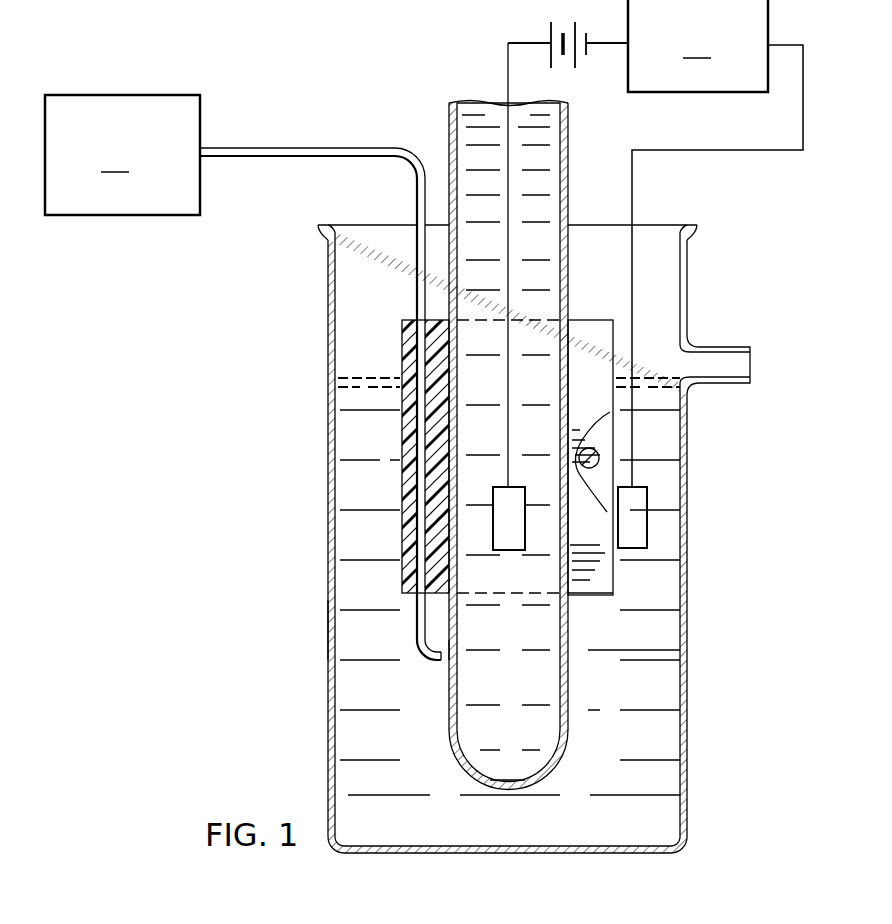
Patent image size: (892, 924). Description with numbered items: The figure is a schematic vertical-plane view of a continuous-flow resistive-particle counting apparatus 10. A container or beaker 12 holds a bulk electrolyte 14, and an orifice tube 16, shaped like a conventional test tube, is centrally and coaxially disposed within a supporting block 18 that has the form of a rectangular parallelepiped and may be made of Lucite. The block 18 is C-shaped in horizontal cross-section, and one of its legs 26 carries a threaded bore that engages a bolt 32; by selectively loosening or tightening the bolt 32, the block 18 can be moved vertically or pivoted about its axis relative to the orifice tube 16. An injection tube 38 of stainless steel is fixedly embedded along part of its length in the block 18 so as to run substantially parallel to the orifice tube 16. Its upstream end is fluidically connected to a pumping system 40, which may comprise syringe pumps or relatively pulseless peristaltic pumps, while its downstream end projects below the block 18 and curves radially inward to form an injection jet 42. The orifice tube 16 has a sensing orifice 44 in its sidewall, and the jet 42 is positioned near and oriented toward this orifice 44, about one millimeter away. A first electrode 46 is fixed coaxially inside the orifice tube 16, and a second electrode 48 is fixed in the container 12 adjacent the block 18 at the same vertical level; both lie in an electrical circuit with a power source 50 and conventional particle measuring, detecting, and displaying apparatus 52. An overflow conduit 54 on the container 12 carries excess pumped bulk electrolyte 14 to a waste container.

The continuous-flow resistive-particle counting apparatus 10 is at (315, 630).
The container or beaker 12 is at (372, 853).
The bulk electrolyte 14 is at (612, 815).
The orifice tube 16 is at (568, 705).
The supporting block 18 is at (580, 322).
The leg of block 26 is at (590, 583).
The bolt 32 is at (588, 470).
The injection tube 38 is at (418, 513).
The pumping system 40 is at (122, 155).
The injection jet 42 is at (440, 658).
The sensing orifice 44 is at (456, 650).
The first electrode 46 is at (495, 500).
The second electrode 48 is at (640, 549).
The power source 50 is at (551, 35).
The particle measuring, detecting, and displaying apparatus 52 is at (715, 243).
The overflow conduit 54 is at (727, 346).